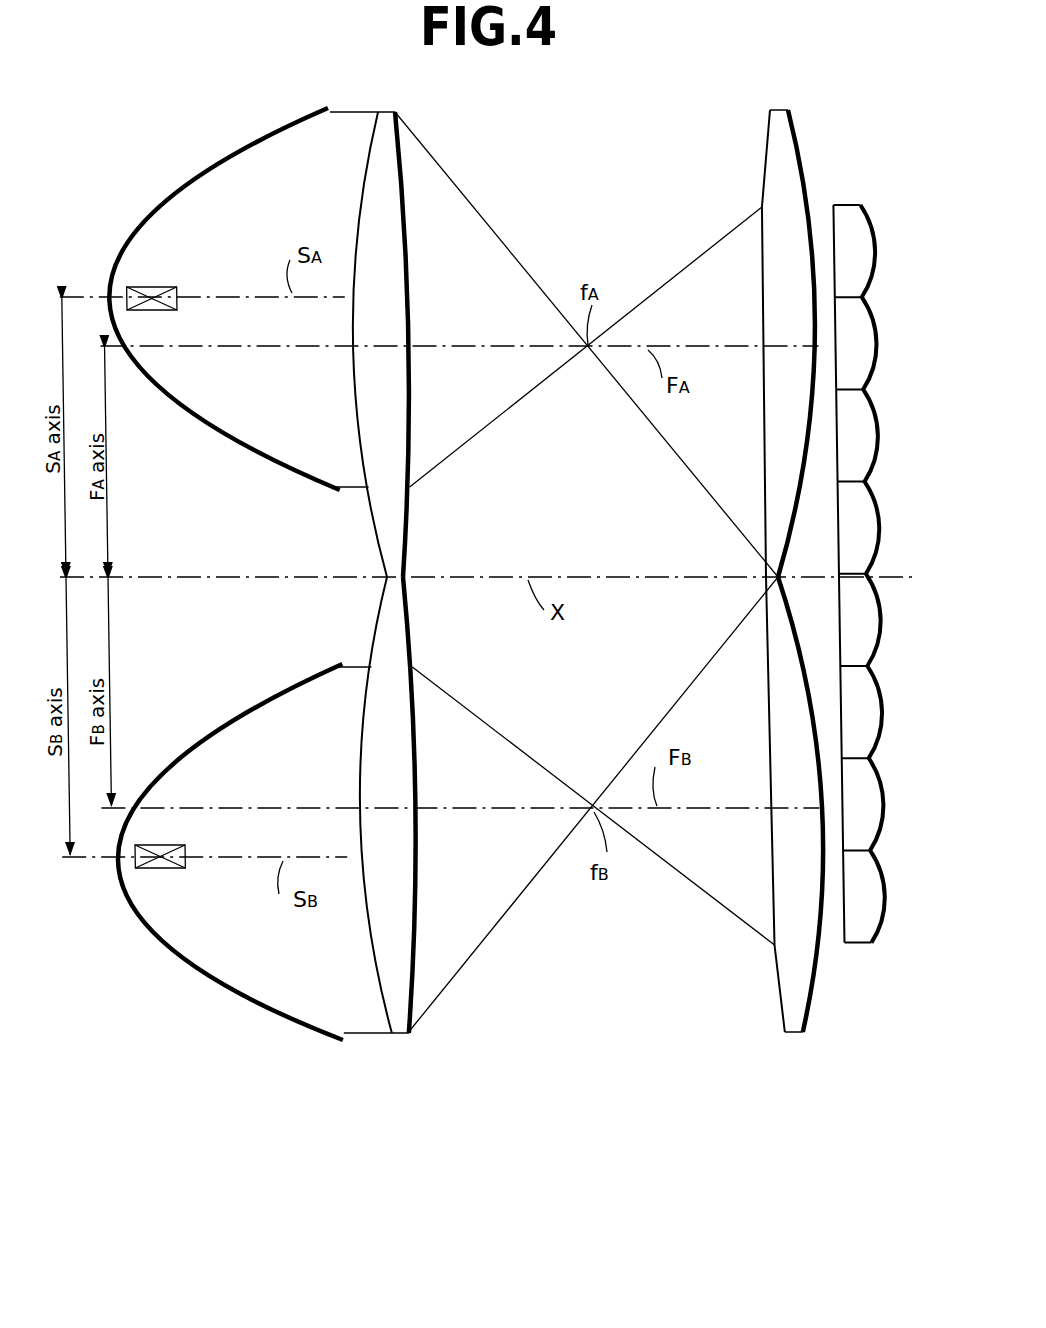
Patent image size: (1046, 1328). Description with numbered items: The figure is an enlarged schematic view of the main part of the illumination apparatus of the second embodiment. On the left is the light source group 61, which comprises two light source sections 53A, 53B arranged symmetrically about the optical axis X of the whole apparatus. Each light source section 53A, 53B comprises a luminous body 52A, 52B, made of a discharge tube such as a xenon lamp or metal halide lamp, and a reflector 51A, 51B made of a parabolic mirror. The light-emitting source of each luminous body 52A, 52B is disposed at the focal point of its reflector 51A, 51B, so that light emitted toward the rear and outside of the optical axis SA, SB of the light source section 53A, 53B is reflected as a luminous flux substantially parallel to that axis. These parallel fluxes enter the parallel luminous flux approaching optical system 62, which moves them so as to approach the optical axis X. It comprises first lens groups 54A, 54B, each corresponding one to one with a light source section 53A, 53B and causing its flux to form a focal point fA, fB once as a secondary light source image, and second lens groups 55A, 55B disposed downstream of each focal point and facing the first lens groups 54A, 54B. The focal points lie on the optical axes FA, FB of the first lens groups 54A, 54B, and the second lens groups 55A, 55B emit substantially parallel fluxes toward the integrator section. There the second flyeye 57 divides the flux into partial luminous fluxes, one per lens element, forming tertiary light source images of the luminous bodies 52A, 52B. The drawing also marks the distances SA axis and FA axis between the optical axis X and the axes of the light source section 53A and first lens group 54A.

The reflector 51A is at (197, 175).
The reflector 51B is at (204, 973).
The luminous body 52A is at (168, 287).
The luminous body 52B is at (179, 868).
The light source section 53A is at (245, 123).
The light source section 53B is at (285, 1046).
The first lens group 54A is at (389, 118).
The first lens group 54B is at (400, 1032).
The second lens group 55A is at (788, 112).
The second lens group 55B is at (795, 1032).
The second flyeye 57 is at (863, 925).
The light source group 61 is at (200, 1107).
The parallel luminous flux approaching optical system 62 is at (812, 1102).